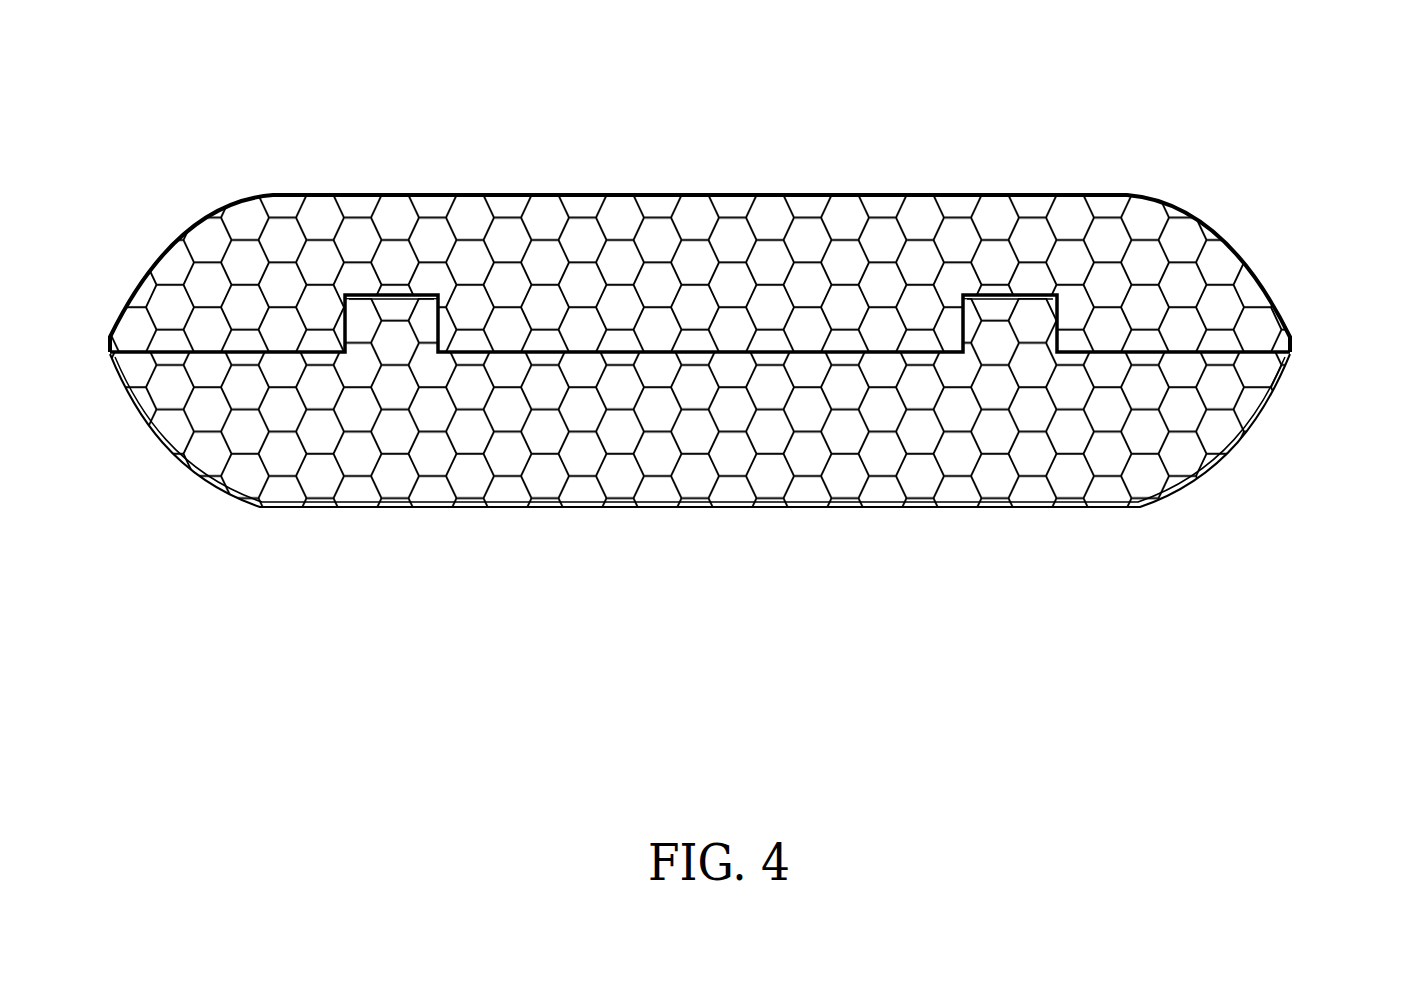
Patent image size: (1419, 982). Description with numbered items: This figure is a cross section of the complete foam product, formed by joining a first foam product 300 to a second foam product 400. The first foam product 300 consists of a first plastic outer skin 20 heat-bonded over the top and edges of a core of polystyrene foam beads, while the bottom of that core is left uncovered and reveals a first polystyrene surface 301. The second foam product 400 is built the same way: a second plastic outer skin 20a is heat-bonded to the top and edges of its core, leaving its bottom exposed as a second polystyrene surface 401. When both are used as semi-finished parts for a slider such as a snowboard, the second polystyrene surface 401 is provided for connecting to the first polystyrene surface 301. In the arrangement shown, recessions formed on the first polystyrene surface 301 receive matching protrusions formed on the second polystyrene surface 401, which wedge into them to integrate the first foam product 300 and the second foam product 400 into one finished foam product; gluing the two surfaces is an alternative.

The first plastic outer skin 20 is at (1068, 195).
The second plastic outer skin 20a is at (983, 507).
The first foam product 300 is at (1260, 254).
The first polystyrene surface 301 is at (652, 348).
The second foam product 400 is at (1272, 411).
The second polystyrene surface 401 is at (803, 352).